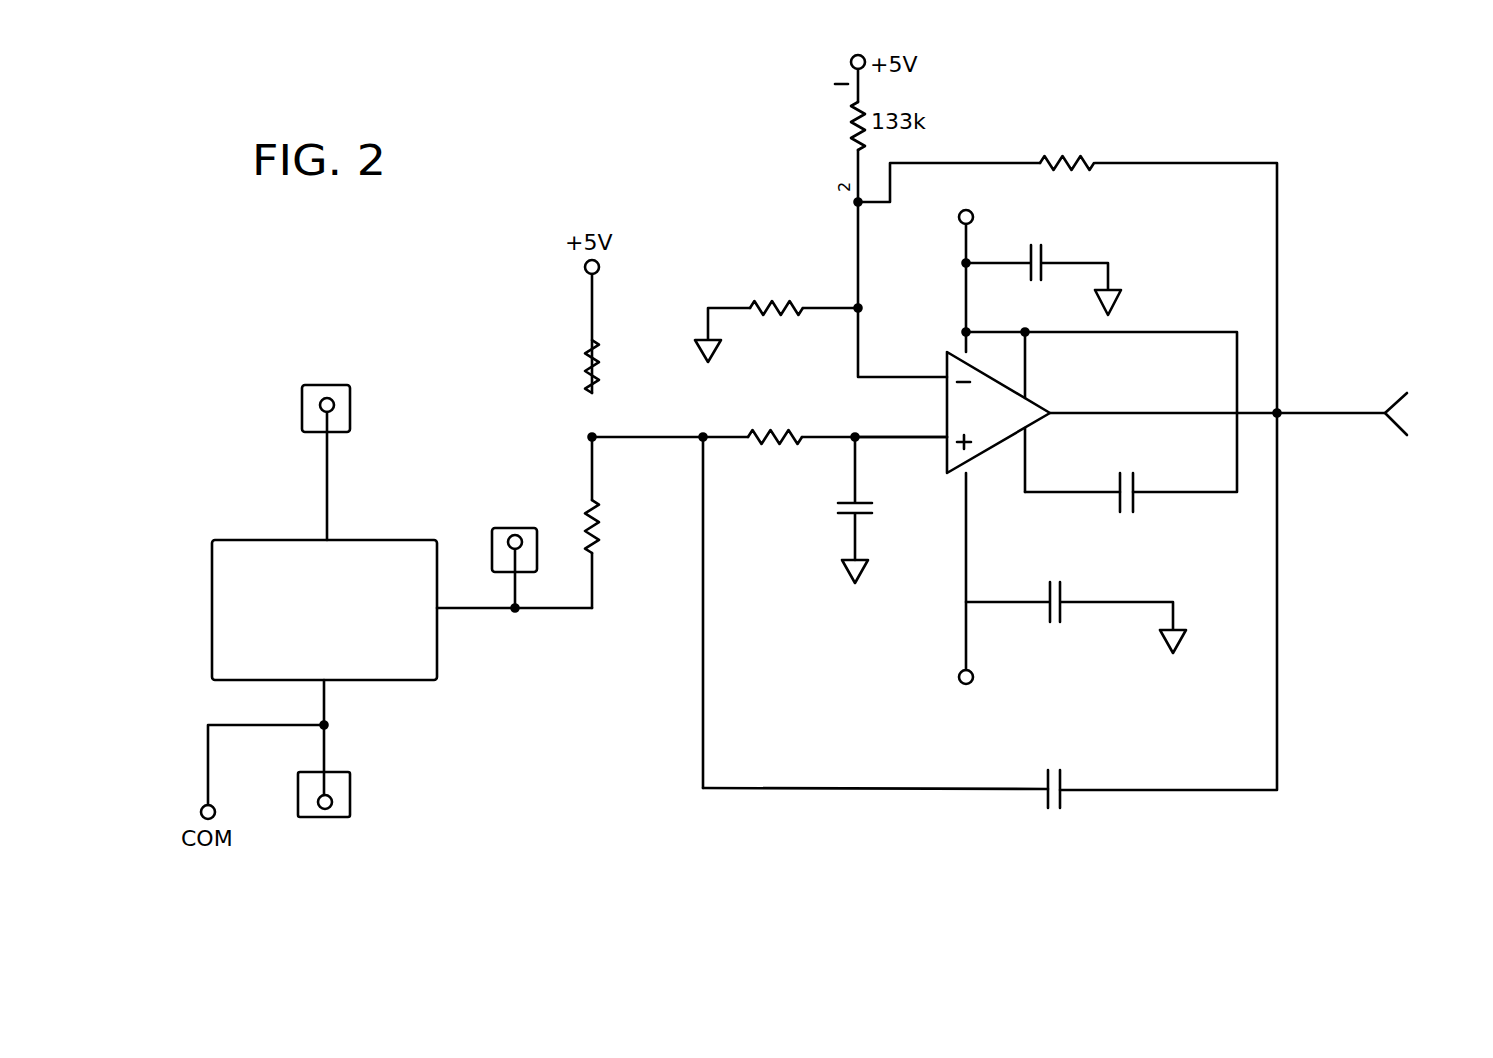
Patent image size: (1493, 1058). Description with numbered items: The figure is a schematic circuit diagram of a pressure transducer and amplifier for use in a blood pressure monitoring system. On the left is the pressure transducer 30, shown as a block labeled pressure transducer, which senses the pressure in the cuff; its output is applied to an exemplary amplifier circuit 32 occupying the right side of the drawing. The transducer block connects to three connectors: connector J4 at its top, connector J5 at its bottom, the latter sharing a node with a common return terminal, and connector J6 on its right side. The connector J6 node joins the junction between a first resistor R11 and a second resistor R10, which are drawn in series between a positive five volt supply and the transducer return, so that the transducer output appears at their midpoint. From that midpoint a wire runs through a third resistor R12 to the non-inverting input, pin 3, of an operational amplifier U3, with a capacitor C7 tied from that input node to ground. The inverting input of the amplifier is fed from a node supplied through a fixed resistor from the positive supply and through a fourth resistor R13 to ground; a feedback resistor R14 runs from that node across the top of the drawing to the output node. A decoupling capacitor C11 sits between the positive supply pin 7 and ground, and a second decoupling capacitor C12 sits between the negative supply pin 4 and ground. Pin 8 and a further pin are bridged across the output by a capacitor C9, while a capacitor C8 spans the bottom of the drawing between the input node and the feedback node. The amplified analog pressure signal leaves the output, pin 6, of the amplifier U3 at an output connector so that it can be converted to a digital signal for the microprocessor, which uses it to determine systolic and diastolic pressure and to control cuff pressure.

The pressure transducer 30 is at (212, 566).
The amplifier 32 is at (1080, 467).
The operational amplifier LTC1152 U3 is at (1120, 453).
The resistor 32.4k R10 is at (617, 531).
The resistor 32.4k R11 is at (617, 367).
The resistor 30.9k R12 is at (773, 436).
The resistor 118k R13 is at (776, 316).
The feedback resistor 187k R14 is at (1075, 131).
The capacitor .2uF C7 is at (876, 510).
The capacitor .1uF C8 is at (1059, 795).
The capacitor .1uF C9 is at (1132, 493).
The capacitor .1uF C11 is at (1043, 267).
The capacitor .1uF C12 is at (1076, 605).
The connector J4 is at (326, 449).
The connector J5 is at (324, 796).
The connector J6 is at (514, 554).
The op amp non-inverting input pin 3 is at (901, 425).
The op amp negative supply pin 4 is at (974, 571).
The op amp output pin 6 is at (1217, 399).
The op amp positive supply pin 7 is at (977, 348).
The op amp pin 8 is at (1032, 460).